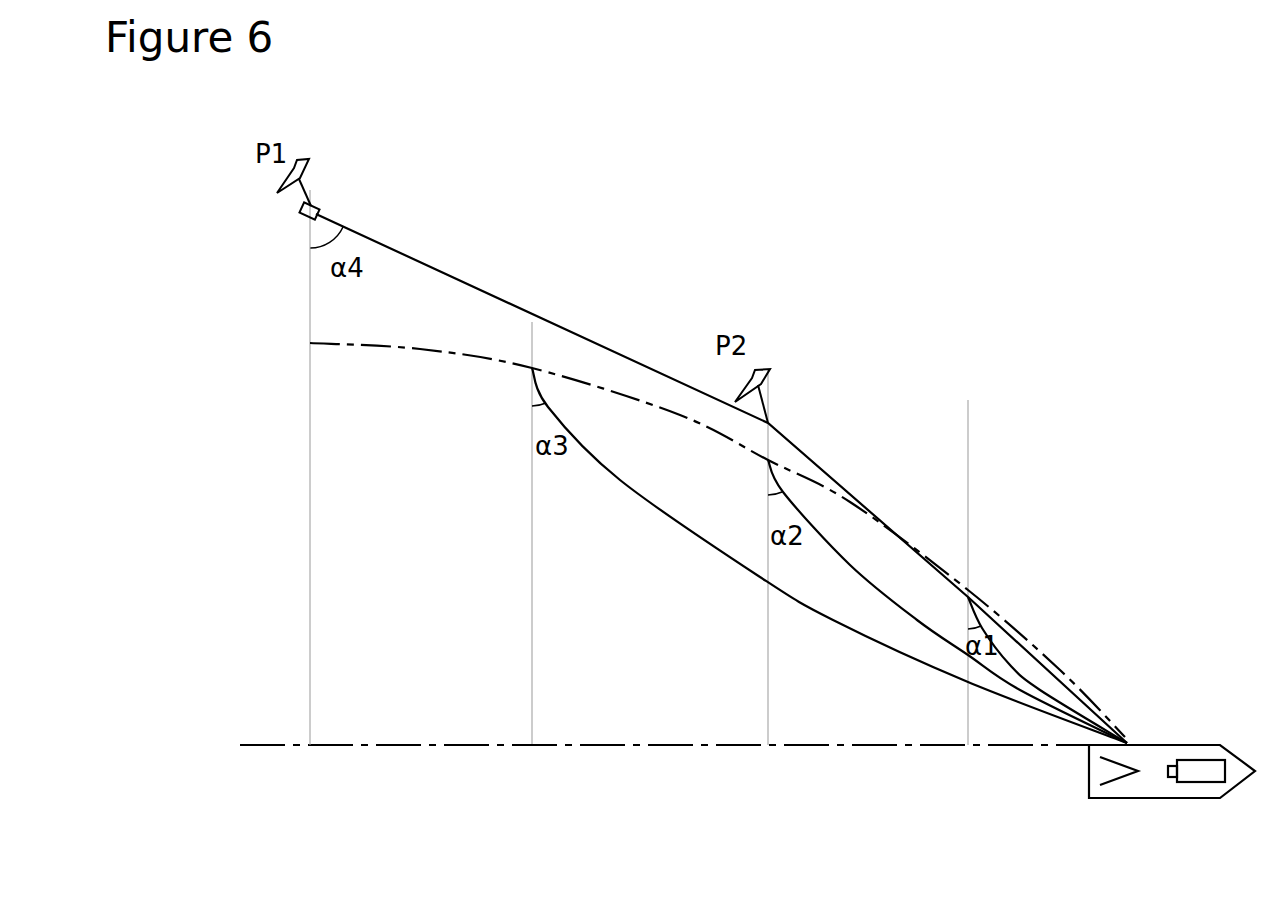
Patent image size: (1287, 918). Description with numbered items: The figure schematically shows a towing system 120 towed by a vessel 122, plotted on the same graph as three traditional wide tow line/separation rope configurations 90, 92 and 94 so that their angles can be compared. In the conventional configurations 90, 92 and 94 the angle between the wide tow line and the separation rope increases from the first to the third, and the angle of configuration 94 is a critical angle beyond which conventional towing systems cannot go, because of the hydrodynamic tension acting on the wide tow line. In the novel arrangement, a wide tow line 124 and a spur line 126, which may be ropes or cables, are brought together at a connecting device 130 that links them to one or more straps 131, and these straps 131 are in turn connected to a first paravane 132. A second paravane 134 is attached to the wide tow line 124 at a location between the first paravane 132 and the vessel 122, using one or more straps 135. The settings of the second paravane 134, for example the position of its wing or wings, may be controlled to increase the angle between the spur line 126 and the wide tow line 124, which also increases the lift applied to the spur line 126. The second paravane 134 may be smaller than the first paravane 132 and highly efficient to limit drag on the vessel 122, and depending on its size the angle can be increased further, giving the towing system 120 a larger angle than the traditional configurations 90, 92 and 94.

The wide tow line/separation rope configuration 90 is at (1004, 578).
The wide tow line/separation rope configuration 92 is at (775, 461).
The wide tow line/separation rope configuration 94 is at (551, 356).
The towing system 120 is at (785, 125).
The vessel 122 is at (1172, 745).
The wide tow line 124 is at (441, 270).
The spur line 126 is at (309, 289).
The connecting device 130 is at (318, 207).
The strap 131 is at (300, 178).
The first paravane 132 is at (302, 160).
The second paravane 134 is at (770, 367).
The strap 135 is at (765, 400).